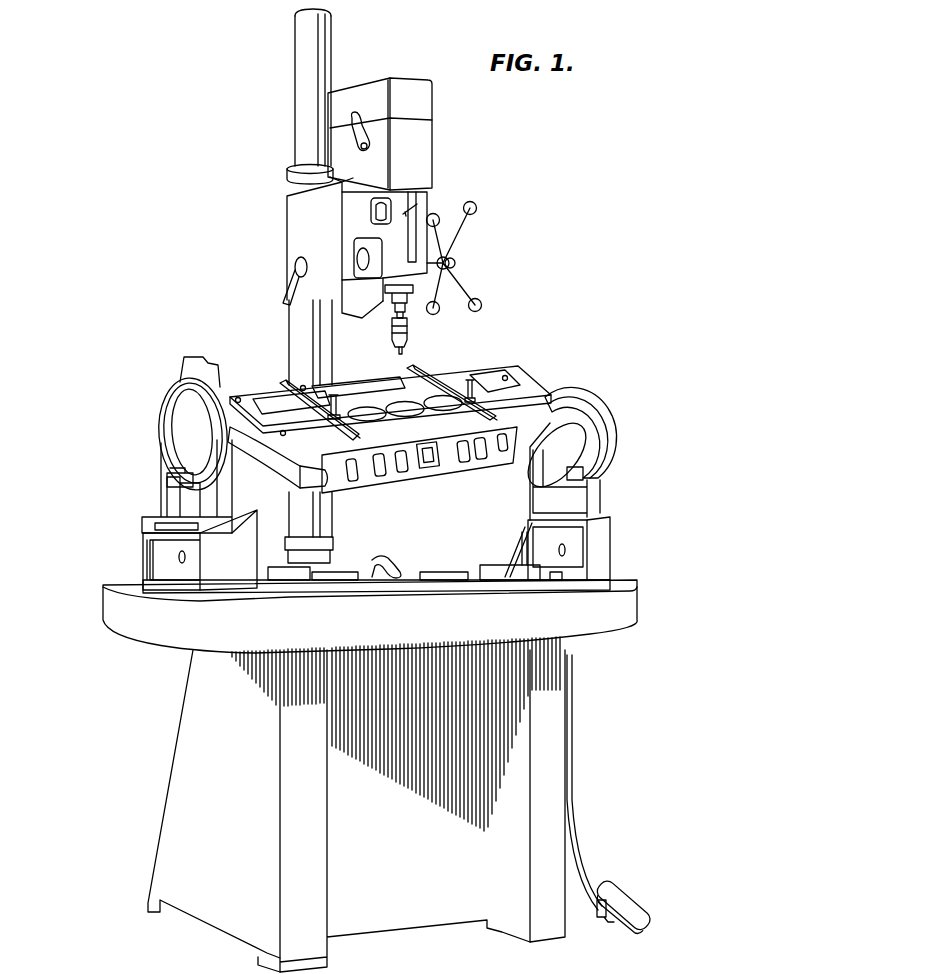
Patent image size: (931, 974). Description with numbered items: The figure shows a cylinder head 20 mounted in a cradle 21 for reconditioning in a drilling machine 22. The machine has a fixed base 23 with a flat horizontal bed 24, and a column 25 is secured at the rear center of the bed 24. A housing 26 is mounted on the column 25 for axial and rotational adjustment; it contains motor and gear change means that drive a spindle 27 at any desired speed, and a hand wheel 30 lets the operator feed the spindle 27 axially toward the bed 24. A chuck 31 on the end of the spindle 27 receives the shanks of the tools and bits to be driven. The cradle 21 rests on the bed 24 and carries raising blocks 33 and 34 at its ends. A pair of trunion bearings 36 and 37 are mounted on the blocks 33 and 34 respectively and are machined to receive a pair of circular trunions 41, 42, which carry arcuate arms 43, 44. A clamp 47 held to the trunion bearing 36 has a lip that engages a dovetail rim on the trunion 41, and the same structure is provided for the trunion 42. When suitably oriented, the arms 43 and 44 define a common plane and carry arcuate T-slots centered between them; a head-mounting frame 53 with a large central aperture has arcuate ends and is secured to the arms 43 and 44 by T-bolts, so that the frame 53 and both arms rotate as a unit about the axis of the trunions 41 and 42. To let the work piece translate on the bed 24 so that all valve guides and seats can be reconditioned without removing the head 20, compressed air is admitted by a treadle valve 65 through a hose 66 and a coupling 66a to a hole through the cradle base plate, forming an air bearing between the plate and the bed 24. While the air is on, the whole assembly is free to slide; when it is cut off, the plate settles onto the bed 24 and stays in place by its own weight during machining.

The cylinder head 20 is at (443, 485).
The cradle 21 is at (617, 547).
The drilling machine 22 is at (470, 180).
The fixed base 23 is at (555, 745).
The bed 24 is at (645, 590).
The column 25 is at (290, 321).
The housing 26 is at (437, 151).
The spindle 27 is at (413, 312).
The hand wheel 30 is at (470, 290).
The chuck 31 is at (410, 335).
The raising block 33 is at (143, 540).
The raising block 34 is at (505, 540).
The trunion bearing 36 is at (160, 450).
The trunion bearing 37 is at (597, 512).
The trunion 41 is at (170, 400).
The trunion 42 is at (583, 398).
The arcuate arm 43 is at (188, 365).
The arcuate arm 44 is at (596, 458).
The clamp 47 is at (172, 482).
The head-mounting frame 53 is at (270, 398).
The treadle valve 65 is at (638, 892).
The hose 66 is at (580, 842).
The coupling 66a is at (378, 556).